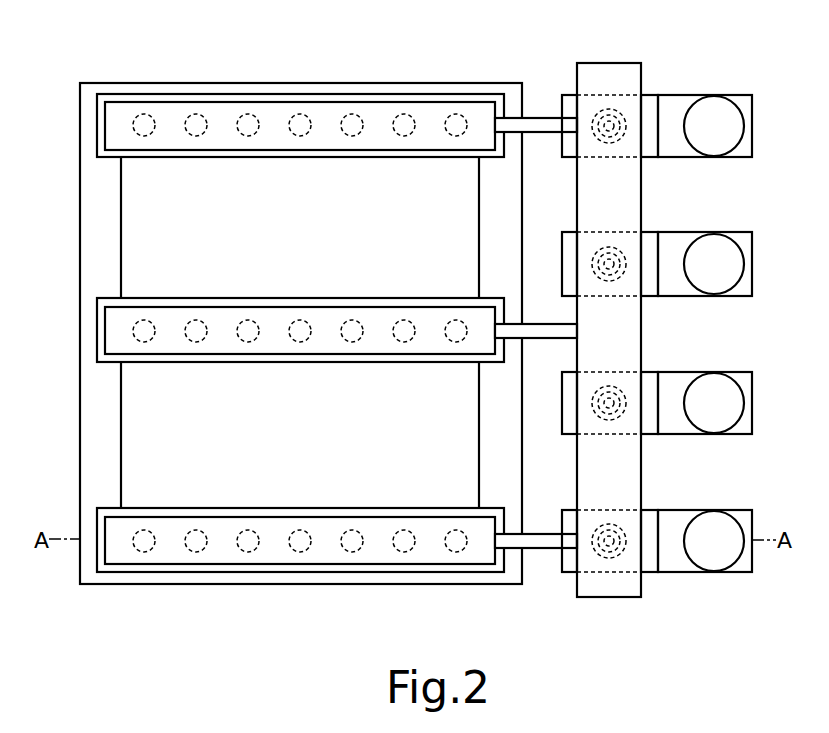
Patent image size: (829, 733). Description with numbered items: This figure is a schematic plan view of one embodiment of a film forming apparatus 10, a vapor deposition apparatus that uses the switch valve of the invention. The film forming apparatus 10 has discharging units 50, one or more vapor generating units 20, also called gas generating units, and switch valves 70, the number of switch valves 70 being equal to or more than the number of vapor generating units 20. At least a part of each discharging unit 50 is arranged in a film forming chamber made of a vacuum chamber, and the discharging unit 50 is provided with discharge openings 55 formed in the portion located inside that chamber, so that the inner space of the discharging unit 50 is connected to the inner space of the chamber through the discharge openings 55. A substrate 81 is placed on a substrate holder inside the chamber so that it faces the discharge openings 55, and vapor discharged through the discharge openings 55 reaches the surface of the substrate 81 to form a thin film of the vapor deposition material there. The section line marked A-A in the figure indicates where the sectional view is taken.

The film forming apparatus 10 is at (66, 41).
The vapor generating unit 20 is at (752, 95).
The discharging unit 50 is at (482, 568).
The discharge opening 55 is at (455, 553).
The switch valve 70 is at (652, 94).
The substrate 81 is at (127, 228).